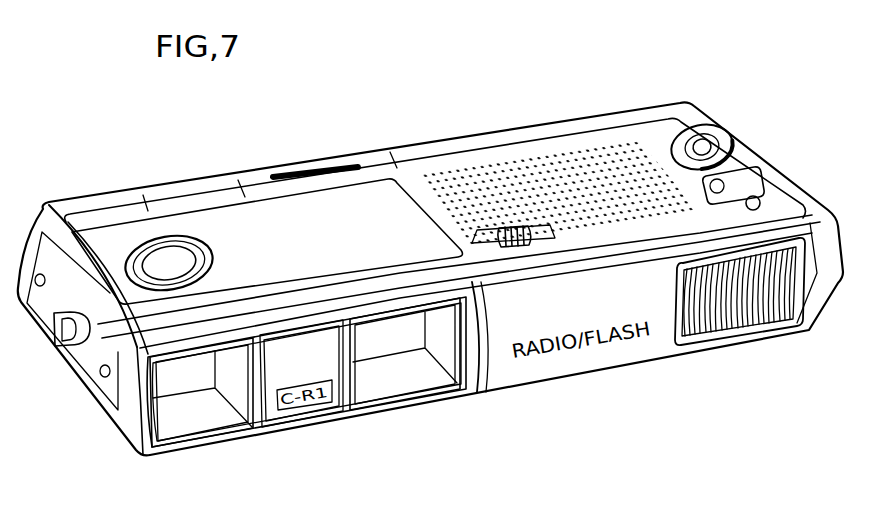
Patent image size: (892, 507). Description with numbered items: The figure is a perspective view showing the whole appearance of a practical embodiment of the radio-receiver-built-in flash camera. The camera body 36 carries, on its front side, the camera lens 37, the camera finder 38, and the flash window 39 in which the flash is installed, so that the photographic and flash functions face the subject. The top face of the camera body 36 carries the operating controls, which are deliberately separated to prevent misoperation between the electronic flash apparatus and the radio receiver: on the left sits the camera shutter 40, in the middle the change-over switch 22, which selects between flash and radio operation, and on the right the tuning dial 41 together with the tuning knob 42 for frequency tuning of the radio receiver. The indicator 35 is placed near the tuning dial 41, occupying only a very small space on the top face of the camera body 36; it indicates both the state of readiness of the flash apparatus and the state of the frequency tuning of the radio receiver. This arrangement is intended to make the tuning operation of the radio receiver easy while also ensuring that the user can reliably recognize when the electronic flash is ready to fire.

The change-over switch 22 is at (503, 233).
The indicator 35 is at (762, 205).
The camera body 36 is at (270, 222).
The camera lens 37 is at (397, 342).
The camera finder 38 is at (192, 377).
The flash window 39 is at (770, 323).
The camera shutter 40 is at (173, 248).
The tuning dial 41 is at (753, 168).
The tuning knob 42 is at (703, 143).